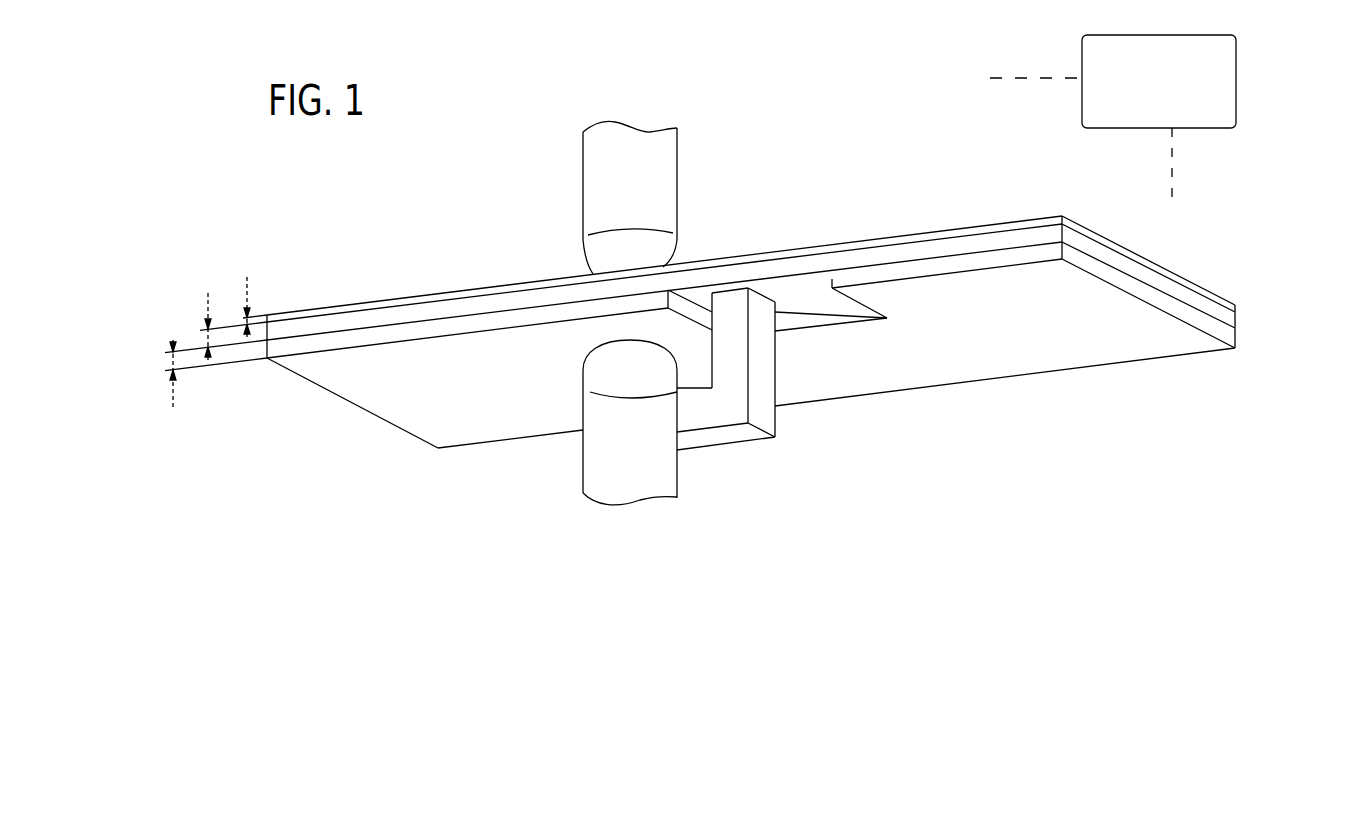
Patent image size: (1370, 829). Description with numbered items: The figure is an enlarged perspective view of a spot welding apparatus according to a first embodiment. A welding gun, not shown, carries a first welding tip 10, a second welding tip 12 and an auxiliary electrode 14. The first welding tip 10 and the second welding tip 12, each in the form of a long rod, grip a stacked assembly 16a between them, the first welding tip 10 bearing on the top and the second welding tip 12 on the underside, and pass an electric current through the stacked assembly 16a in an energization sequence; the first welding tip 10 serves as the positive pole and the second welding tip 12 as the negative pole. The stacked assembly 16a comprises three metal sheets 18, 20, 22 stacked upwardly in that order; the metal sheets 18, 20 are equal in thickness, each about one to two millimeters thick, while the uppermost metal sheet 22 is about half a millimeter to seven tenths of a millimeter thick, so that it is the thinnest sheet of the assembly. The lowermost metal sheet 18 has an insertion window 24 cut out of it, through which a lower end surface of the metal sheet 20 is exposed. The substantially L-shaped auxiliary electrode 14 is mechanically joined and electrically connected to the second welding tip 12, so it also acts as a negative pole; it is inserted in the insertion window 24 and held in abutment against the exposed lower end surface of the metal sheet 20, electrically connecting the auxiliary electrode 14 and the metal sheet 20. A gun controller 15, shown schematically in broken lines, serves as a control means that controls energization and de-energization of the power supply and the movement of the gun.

The first welding tip 10 is at (663, 192).
The second welding tip 12 is at (665, 487).
The auxiliary electrode 14 is at (760, 380).
The gun controller 15 is at (1113, 121).
The stacked assembly 16a is at (1293, 290).
The metal sheet 18 is at (1237, 343).
The metal sheet 20 is at (1237, 327).
The metal sheet 22 is at (1237, 304).
The insertion window 24 is at (832, 279).